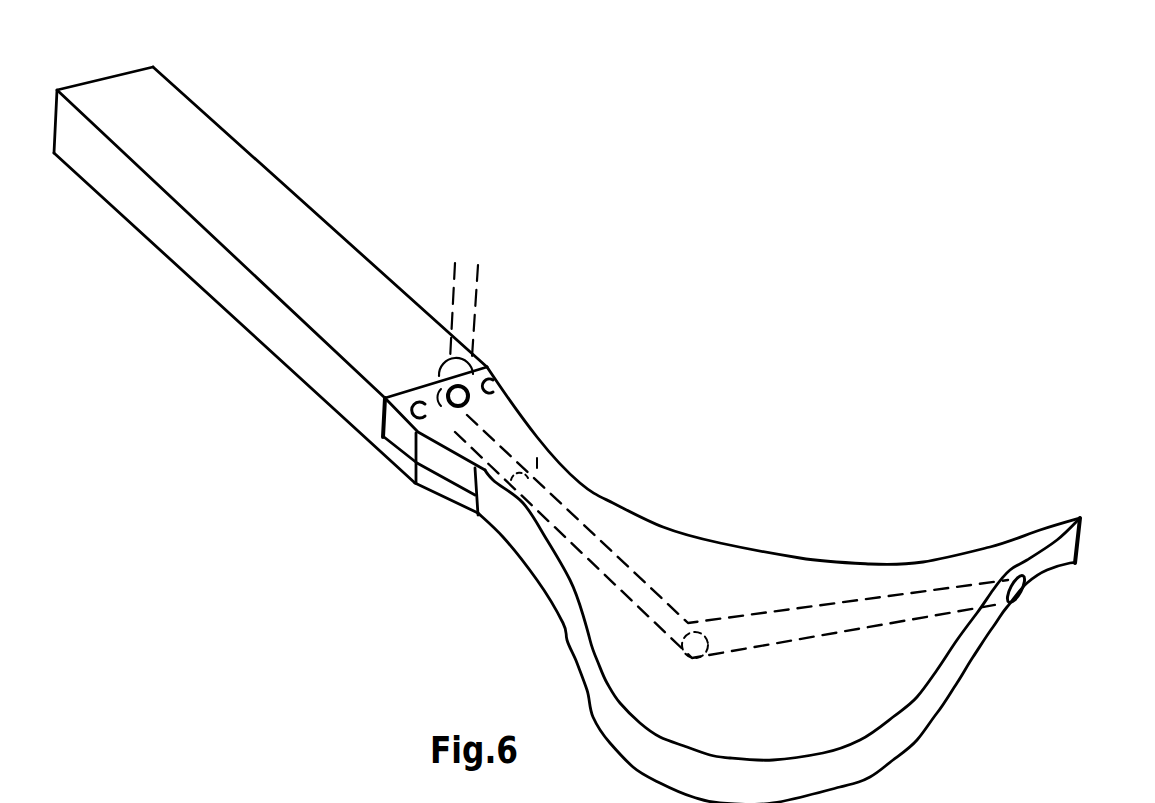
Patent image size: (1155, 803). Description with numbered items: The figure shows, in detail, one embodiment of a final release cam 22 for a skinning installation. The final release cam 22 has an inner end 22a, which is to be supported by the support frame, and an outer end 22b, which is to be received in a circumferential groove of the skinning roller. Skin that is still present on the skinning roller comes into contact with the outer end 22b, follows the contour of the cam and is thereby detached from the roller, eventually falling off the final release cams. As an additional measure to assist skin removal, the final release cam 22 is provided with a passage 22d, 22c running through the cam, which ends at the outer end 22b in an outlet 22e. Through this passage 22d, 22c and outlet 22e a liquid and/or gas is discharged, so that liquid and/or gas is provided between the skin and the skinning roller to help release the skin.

The final release cam 22 is at (600, 418).
The inner end 22a is at (142, 100).
The outer end 22b is at (1010, 557).
The passage 22c is at (622, 583).
The passage 22d is at (463, 303).
The outlet 22e is at (1027, 590).